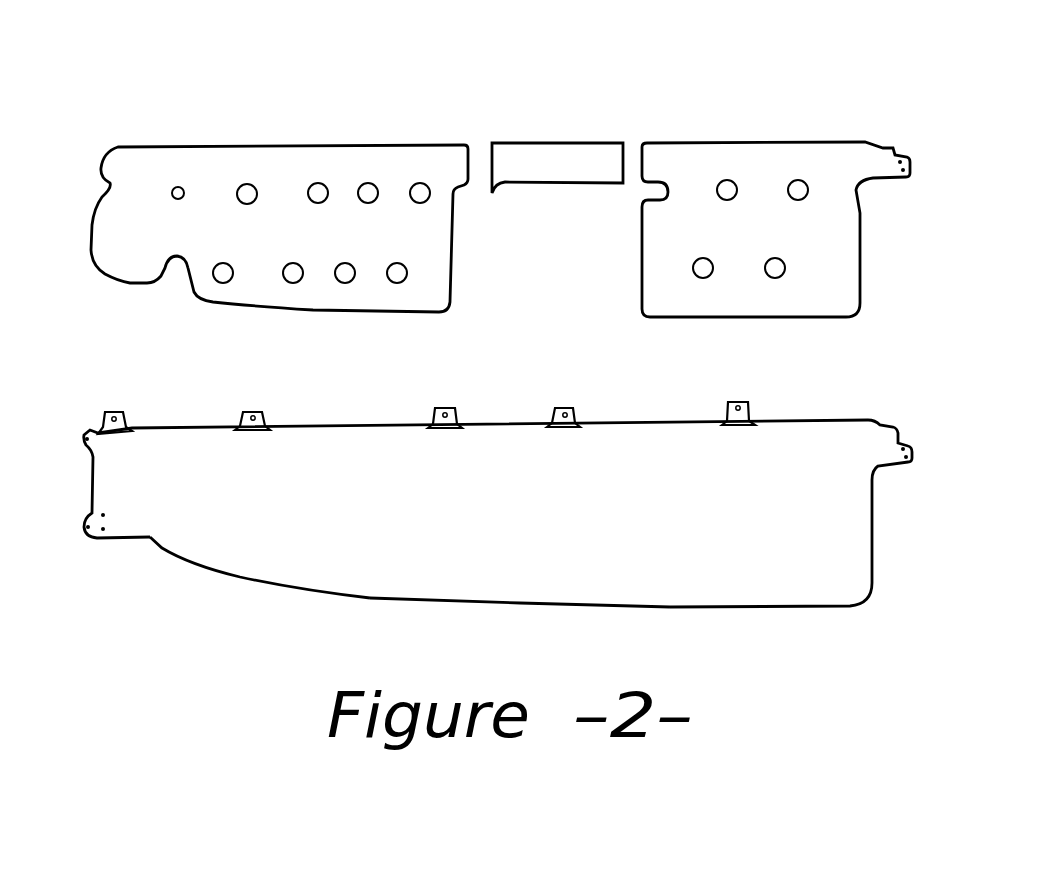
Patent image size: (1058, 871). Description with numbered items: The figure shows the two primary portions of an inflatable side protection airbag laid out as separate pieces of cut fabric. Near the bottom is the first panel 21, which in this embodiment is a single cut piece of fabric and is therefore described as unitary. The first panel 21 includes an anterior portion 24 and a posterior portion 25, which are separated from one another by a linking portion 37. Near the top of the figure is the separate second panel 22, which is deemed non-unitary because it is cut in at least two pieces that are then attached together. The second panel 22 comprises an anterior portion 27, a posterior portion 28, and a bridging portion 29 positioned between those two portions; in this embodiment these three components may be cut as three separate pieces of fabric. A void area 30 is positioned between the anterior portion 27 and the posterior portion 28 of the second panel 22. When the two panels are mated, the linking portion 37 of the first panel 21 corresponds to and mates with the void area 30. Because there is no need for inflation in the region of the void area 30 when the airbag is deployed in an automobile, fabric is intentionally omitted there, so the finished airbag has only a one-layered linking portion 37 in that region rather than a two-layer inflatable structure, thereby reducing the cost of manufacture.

The first panel 21 is at (897, 555).
The second panel 22 is at (728, 80).
The anterior portion 24 is at (738, 580).
The posterior portion 25 is at (243, 548).
The anterior portion 27 is at (762, 152).
The posterior portion 28 is at (212, 157).
The bridging portion 29 is at (558, 155).
The void area 30 is at (532, 278).
The linking portion 37 is at (597, 572).